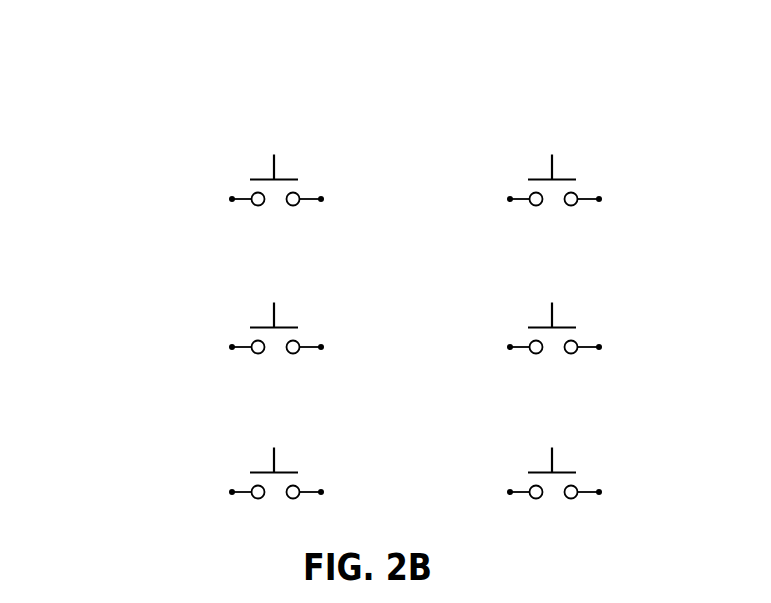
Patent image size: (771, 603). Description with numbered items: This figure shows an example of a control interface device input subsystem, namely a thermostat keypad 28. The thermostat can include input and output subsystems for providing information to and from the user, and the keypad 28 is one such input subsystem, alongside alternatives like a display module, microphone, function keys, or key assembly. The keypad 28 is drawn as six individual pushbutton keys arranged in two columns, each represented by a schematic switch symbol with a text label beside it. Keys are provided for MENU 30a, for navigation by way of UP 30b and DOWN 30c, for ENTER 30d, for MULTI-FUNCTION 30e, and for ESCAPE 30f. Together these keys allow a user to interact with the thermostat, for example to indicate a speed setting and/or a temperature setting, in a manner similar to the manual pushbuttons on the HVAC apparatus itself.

The thermostat keypad 28 is at (63, 77).
The MENU key 30a is at (311, 137).
The UP key 30b is at (317, 286).
The DOWN key 30c is at (317, 429).
The ENTER key 30d is at (583, 137).
The MULTI-FUNCTION key 30e is at (590, 286).
The ESCAPE key 30f is at (590, 429).